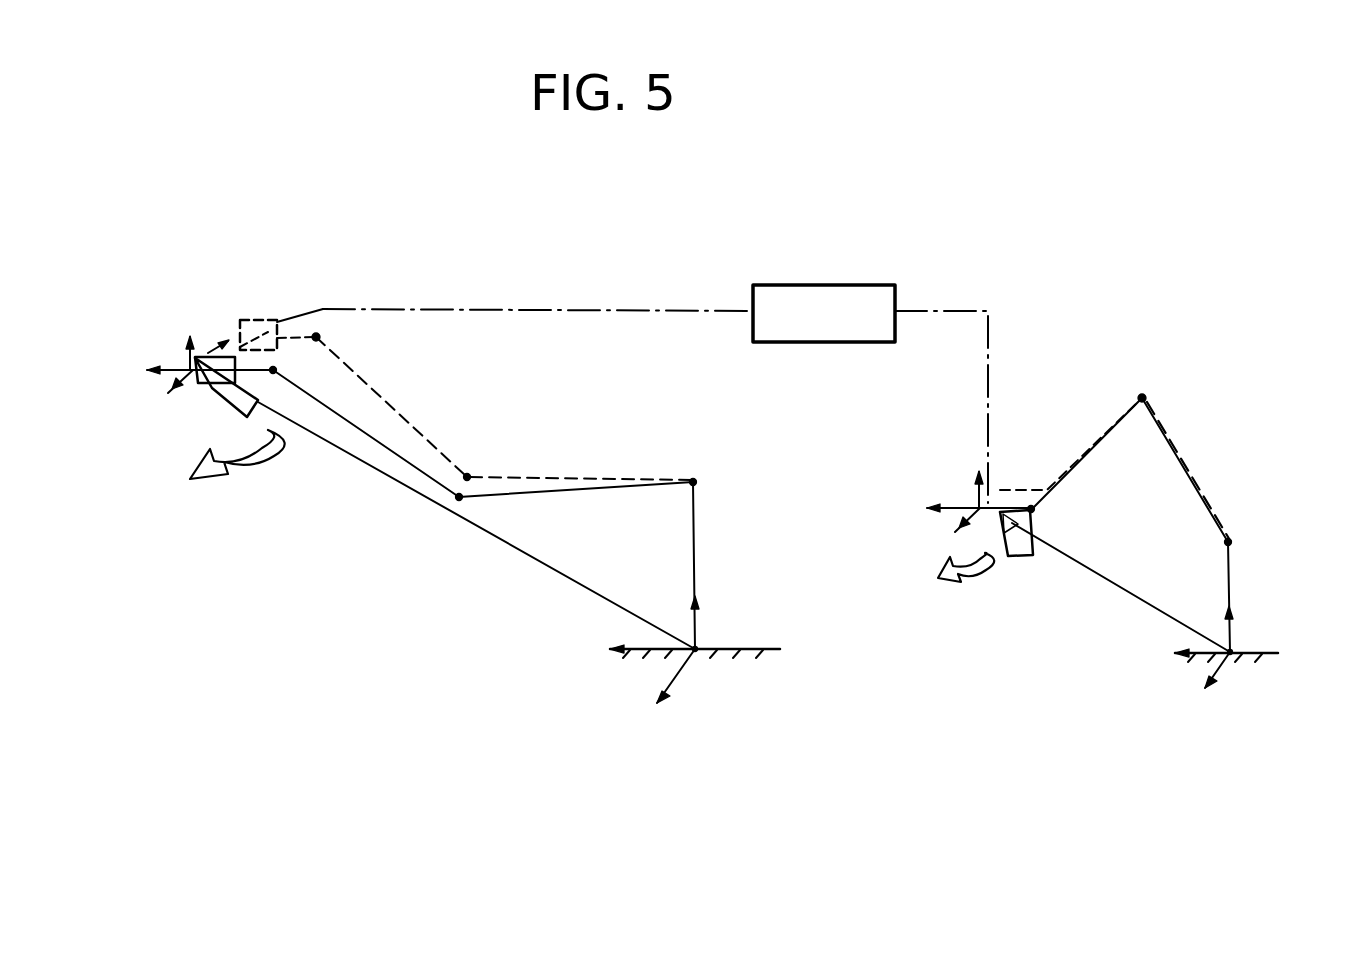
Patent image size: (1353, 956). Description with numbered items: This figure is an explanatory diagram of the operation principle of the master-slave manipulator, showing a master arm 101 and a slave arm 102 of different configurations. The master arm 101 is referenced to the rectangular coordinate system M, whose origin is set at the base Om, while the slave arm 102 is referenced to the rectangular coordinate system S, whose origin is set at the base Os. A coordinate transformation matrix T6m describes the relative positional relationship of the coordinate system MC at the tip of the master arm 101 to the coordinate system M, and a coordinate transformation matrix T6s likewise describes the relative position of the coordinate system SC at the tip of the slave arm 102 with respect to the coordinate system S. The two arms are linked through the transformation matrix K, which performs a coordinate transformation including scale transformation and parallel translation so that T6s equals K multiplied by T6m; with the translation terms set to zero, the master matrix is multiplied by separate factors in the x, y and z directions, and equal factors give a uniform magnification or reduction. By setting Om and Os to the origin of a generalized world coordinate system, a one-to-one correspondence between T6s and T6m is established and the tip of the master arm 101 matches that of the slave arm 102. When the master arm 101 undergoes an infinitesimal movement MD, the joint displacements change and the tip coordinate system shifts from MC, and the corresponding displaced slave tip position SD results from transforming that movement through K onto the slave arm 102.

The coordinate system at the tip of the slave arm SC is at (176, 368).
The slave hand displaced position (dashed) SD is at (207, 351).
The transformation matrix K is at (632, 394).
The slave arm 102 is at (608, 488).
The master arm 101 is at (1178, 461).
The coordinate system at the tip of the master arm MC is at (950, 508).
The infinitesimal movement of the master arm MD is at (1000, 490).
The coordinate transformation matrix of the slave arm T6s is at (457, 513).
The coordinate transformation matrix of the master arm T6m is at (1100, 577).
The base of the slave arm Os is at (714, 628).
The base of the master arm Om is at (1256, 630).
The rectangular coordinate system of the slave arm S is at (681, 654).
The rectangular coordinate system of the master arm M is at (1211, 652).